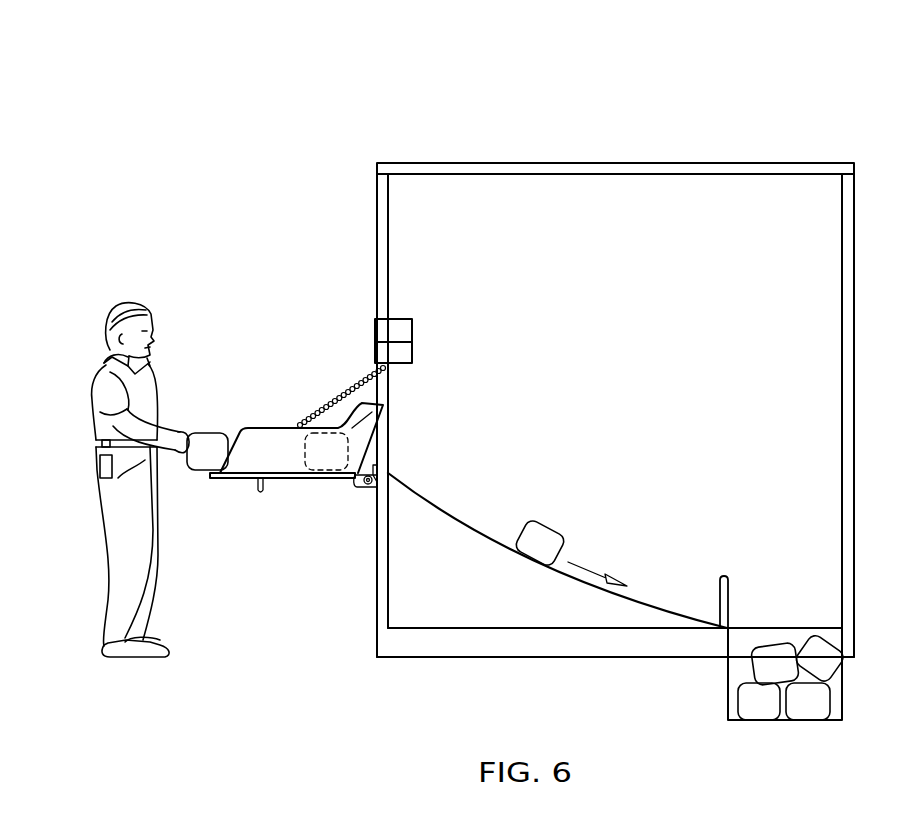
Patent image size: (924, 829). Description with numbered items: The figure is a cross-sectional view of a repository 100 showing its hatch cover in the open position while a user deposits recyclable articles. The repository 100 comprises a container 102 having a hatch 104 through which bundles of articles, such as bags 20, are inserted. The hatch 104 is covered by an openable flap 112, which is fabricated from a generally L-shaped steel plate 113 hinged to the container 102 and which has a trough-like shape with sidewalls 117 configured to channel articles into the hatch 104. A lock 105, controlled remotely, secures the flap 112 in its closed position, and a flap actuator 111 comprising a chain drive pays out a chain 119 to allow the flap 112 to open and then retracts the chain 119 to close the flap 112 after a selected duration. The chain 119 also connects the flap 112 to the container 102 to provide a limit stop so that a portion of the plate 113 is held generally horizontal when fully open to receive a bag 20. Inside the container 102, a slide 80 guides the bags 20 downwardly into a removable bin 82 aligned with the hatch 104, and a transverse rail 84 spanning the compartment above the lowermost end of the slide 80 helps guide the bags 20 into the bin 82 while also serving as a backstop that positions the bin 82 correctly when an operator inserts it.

The bag 20 is at (212, 432).
The slide 80 is at (435, 500).
The bin 82 is at (726, 688).
The transverse rail 84 is at (722, 576).
The repository 100 is at (828, 99).
The container 102 is at (492, 163).
The hatch 104 is at (390, 430).
The lock 105 is at (414, 330).
The flap actuator 111 is at (414, 350).
The flap 112 is at (245, 478).
The steel plate 113 is at (318, 478).
The sidewall 117 is at (293, 468).
The chain 119 is at (343, 400).